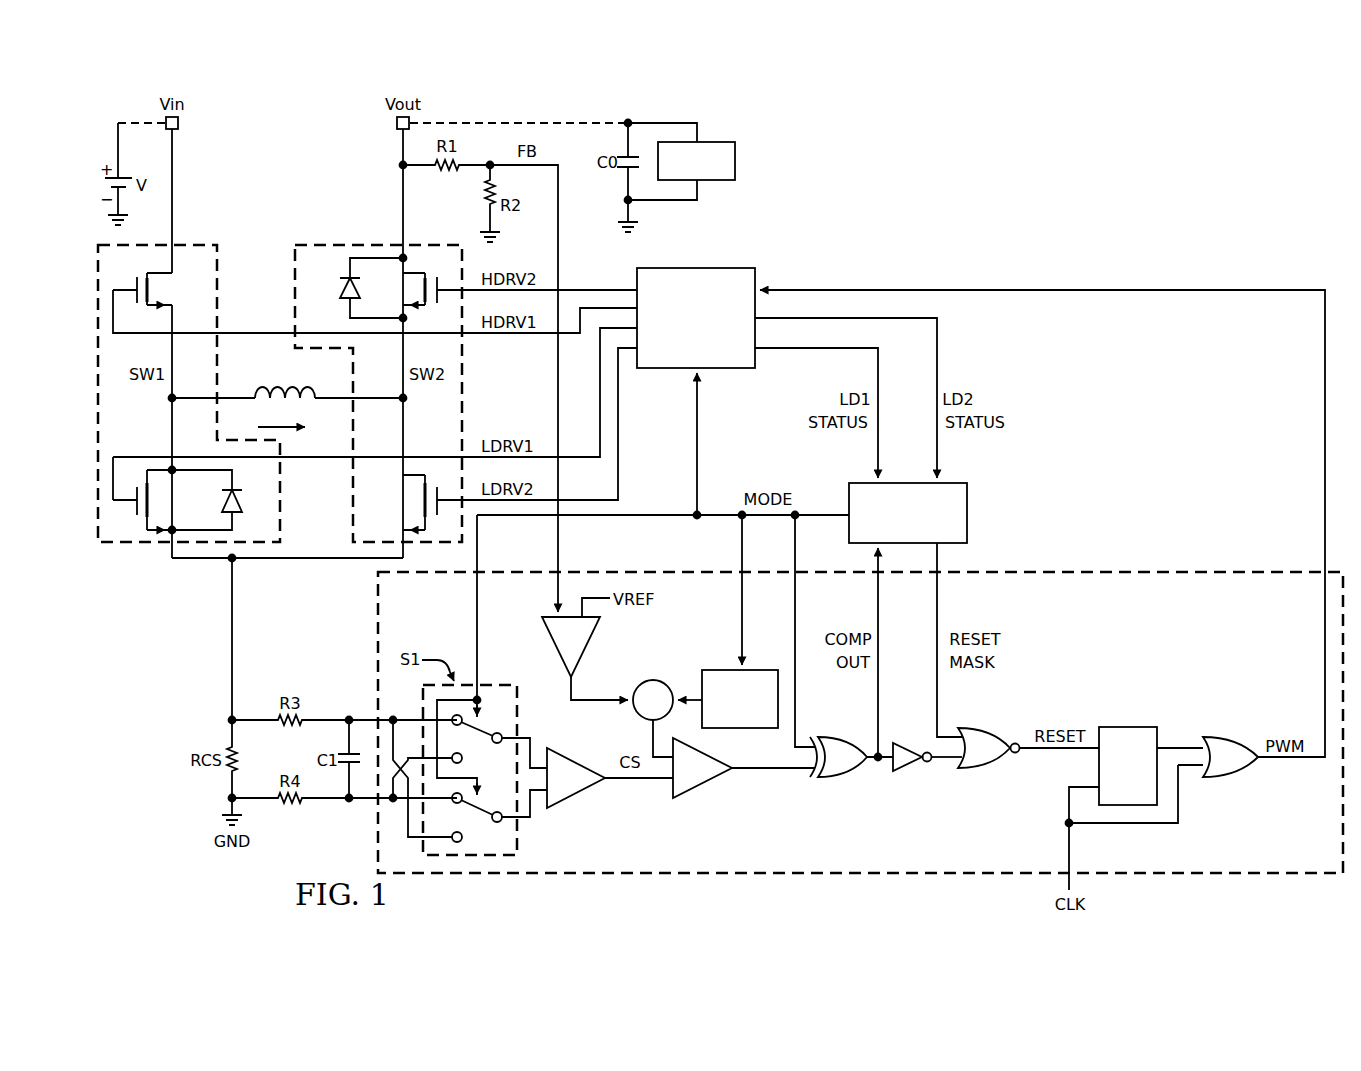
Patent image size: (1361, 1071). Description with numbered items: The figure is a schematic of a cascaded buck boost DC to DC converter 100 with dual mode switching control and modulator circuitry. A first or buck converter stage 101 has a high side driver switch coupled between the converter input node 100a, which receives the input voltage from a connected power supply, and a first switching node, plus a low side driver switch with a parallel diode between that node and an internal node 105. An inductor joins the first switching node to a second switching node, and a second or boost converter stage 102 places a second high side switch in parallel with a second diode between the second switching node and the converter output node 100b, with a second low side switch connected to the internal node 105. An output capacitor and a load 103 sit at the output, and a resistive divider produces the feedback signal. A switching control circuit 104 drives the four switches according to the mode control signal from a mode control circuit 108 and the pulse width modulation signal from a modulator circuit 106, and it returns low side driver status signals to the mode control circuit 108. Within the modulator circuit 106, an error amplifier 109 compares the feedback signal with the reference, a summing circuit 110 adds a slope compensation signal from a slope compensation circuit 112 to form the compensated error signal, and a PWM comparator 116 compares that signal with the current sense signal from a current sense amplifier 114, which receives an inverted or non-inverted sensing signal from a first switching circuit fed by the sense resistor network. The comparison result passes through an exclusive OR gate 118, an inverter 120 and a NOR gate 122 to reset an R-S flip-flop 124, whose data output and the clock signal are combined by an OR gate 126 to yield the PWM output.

The cascaded buck boost DC to DC converter 100 is at (1141, 166).
The converter input node 100a is at (178, 131).
The converter output node 100b is at (397, 131).
The first or buck converter stage 101 is at (131, 550).
The second or boost converter stage 102 is at (345, 243).
The load 103 is at (735, 167).
The switching control circuit 104 is at (712, 267).
The internal node 105 is at (296, 560).
The modulator circuit 106 is at (1178, 644).
The mode control circuit 108 is at (967, 508).
The error amplifier 109 is at (549, 647).
The summing circuit 110 is at (660, 683).
The slope compensation circuit 112 is at (756, 670).
The current sense amplifier 114 is at (574, 798).
The PWM comparator 116 is at (712, 796).
The exclusive OR gate 118 is at (844, 780).
The inverter 120 is at (910, 770).
The NOR gate 122 is at (988, 775).
The R-S flip-flop 124 is at (1128, 727).
The OR gate 126 is at (1232, 778).